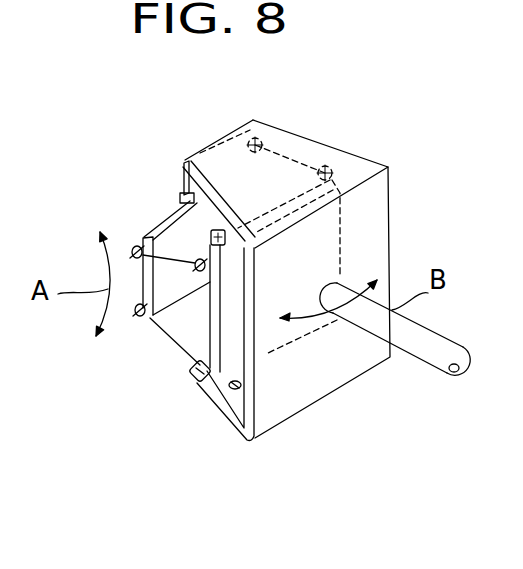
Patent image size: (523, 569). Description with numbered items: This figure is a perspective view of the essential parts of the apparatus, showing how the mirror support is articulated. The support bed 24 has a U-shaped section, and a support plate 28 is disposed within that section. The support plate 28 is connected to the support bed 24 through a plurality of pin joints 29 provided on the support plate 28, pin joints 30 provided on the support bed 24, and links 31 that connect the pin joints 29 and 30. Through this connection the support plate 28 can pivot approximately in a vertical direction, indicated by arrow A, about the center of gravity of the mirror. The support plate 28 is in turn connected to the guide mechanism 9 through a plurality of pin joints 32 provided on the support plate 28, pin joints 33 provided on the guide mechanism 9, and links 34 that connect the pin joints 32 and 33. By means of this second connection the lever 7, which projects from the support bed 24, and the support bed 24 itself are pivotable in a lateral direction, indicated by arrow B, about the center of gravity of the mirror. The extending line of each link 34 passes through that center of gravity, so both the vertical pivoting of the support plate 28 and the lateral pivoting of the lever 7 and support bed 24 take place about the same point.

The lever 7 is at (417, 357).
The guide mechanism 9 is at (150, 232).
The support bed 24 is at (390, 230).
The support plate 28 is at (243, 363).
The pin joints 29 is at (232, 225).
The pin joints 30 is at (185, 196).
The links 31 is at (213, 178).
The pin joints 32 is at (197, 390).
The pin joints 33 is at (140, 318).
The links 34 is at (168, 340).